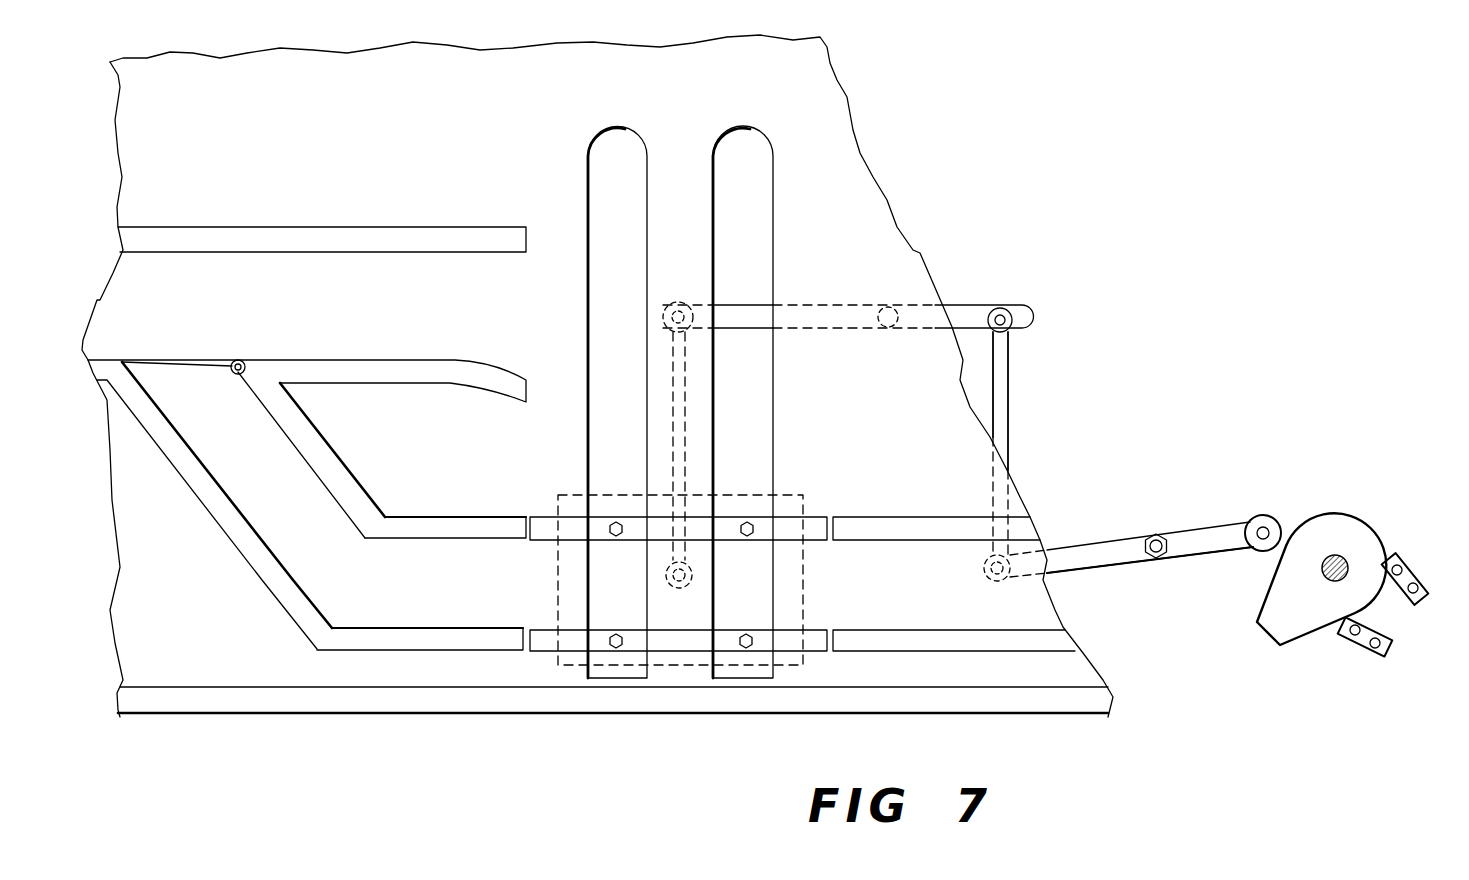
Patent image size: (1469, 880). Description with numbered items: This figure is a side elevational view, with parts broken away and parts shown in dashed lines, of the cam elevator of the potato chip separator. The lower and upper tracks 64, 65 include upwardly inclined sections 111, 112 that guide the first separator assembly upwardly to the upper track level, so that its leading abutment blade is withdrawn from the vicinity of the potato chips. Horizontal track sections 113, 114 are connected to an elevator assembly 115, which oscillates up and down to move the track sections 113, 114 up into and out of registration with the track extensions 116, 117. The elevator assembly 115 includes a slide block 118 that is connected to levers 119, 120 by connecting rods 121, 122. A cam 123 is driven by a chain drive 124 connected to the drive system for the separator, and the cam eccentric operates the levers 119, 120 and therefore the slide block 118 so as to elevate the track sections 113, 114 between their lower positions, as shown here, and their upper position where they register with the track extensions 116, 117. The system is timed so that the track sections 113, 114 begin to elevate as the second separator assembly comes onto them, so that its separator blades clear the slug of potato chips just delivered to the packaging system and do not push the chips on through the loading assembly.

The lower track 64 is at (438, 637).
The upper track 65 is at (463, 525).
The upwardly inclined section 111 is at (263, 560).
The upwardly inclined section 112 is at (333, 470).
The horizontal track section 113 is at (813, 637).
The horizontal track section 114 is at (810, 545).
The elevator assembly 115 is at (753, 509).
The track extension 116 is at (378, 370).
The track extension 117 is at (385, 240).
The slide block 118 is at (738, 493).
The lever 119 is at (972, 312).
The lever 120 is at (1108, 550).
The connecting rod 121 is at (687, 395).
The connecting rod 122 is at (1002, 400).
The cam 123 is at (1338, 528).
The chain drive 124 is at (1367, 648).